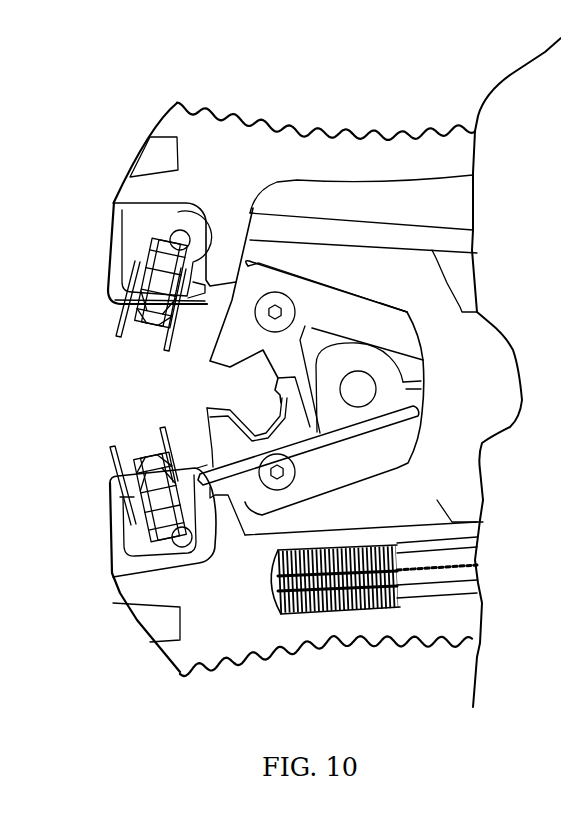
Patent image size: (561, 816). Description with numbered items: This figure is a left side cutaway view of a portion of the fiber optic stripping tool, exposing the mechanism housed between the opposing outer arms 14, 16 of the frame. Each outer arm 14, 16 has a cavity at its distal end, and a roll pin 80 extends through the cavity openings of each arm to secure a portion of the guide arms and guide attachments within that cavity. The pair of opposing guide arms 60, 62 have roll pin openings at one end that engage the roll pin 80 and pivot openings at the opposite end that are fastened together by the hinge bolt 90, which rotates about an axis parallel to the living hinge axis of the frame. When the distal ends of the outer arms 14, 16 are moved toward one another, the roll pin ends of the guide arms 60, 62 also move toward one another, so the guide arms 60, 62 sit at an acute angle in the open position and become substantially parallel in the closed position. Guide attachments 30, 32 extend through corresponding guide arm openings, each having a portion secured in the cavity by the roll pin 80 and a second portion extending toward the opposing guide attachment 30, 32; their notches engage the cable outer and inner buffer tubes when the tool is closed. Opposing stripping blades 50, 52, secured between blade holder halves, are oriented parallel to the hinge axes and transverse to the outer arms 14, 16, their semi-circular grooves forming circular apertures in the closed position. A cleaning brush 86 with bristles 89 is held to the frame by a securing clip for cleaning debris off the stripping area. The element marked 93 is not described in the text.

The outer arm 14 is at (438, 622).
The outer arm 16 is at (420, 170).
The guide attachment 30 is at (140, 520).
The guide attachment 32 is at (145, 225).
The stripping blade 50 is at (160, 450).
The stripping blade 52 is at (157, 333).
The guide arm 60 is at (378, 460).
The guide arm 62 is at (365, 310).
The roll pin 80 is at (185, 230).
The cleaning brush 86 is at (462, 570).
The bristles 89 is at (360, 610).
The hinge bolt 90 is at (365, 392).
The notch 93 is at (423, 390).